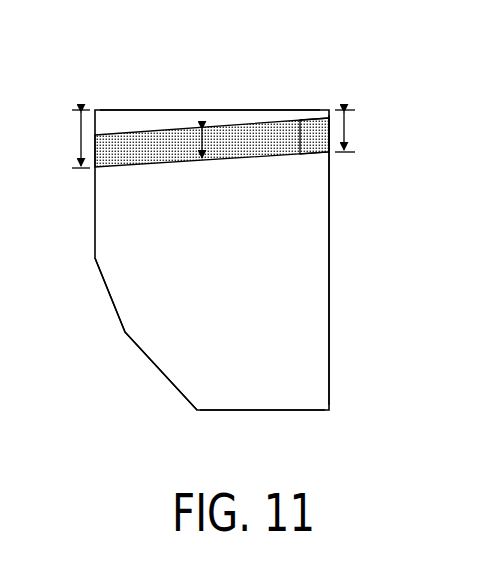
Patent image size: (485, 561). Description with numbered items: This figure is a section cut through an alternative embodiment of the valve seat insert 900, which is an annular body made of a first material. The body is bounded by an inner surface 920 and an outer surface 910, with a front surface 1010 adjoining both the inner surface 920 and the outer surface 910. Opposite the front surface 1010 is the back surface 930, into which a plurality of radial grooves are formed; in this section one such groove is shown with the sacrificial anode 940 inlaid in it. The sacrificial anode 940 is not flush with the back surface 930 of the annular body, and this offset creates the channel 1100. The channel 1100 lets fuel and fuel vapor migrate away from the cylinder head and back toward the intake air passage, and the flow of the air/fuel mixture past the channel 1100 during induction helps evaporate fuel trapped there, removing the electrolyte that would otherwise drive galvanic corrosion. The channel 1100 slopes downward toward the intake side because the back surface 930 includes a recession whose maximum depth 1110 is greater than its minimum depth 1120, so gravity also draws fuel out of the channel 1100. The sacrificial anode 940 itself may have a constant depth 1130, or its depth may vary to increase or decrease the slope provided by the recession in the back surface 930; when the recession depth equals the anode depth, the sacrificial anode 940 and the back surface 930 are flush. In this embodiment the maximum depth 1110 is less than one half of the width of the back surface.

The valve seat insert 900 is at (72, 226).
The outer surface 910 is at (332, 315).
The inner surface 920 is at (100, 355).
The back surface 930 is at (155, 109).
The sacrificial anode 940 is at (307, 140).
The front surface 1010 is at (288, 413).
The channel 1100 is at (226, 118).
The maximum depth 1110 is at (64, 139).
The minimum depth 1120 is at (365, 131).
The constant depth 1130 is at (200, 145).